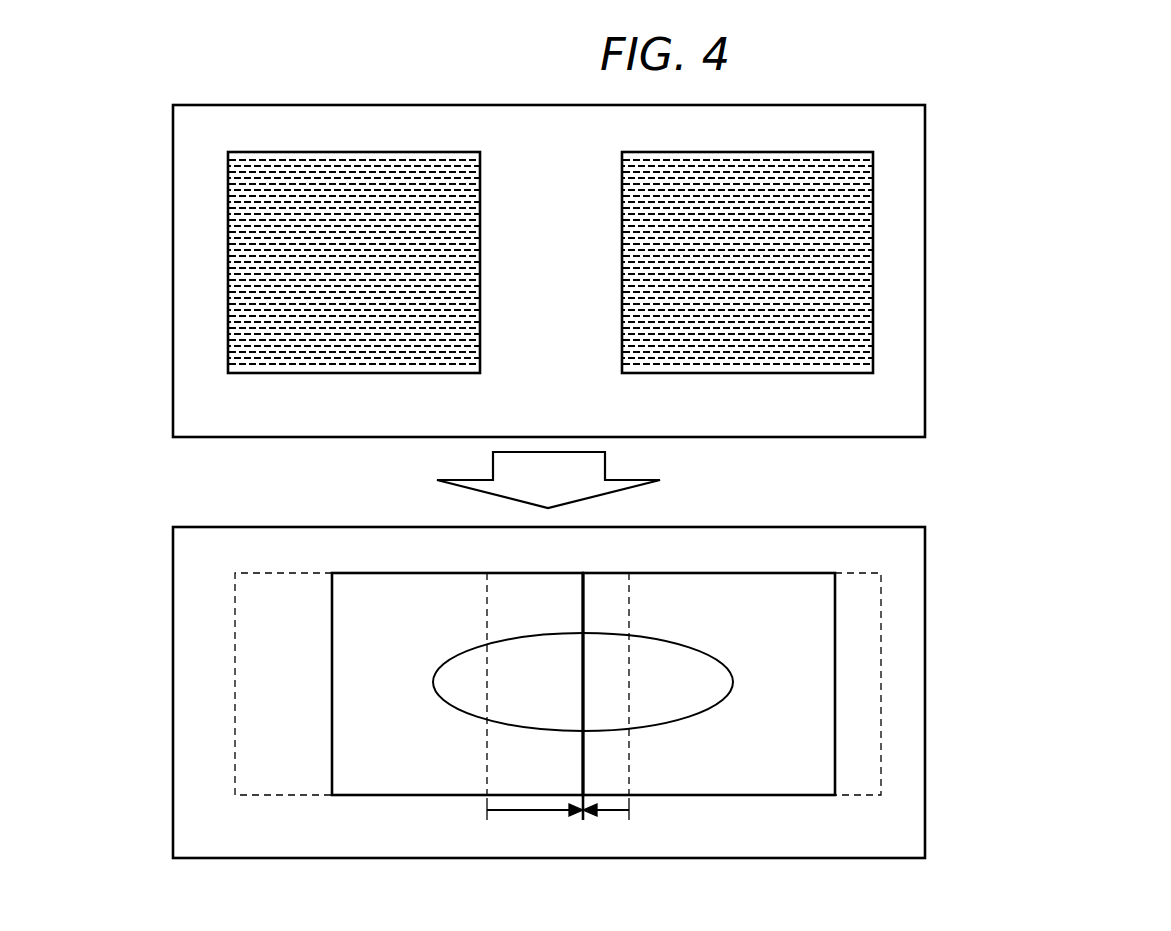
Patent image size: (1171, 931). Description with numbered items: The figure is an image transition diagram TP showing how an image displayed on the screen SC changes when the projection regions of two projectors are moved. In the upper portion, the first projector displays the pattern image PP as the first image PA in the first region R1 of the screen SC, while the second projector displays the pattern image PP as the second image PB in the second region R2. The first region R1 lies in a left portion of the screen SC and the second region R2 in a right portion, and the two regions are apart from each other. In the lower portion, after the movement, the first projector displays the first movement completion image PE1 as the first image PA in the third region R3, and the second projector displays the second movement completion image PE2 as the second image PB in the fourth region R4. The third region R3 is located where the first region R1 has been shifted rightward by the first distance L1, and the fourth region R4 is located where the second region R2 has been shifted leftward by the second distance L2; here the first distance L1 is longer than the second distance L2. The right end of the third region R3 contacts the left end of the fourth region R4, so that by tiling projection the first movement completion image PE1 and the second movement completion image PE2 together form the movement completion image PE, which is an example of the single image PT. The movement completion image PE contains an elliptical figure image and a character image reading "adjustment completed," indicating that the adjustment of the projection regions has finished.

The image transition diagram TP is at (696, 455).
The screen SC is at (925, 247).
The first region R1 is at (262, 573).
The second region R2 is at (881, 597).
The third region R3 is at (457, 665).
The fourth region R4 is at (709, 666).
The pattern image PP is at (550, 455).
The first image PA is at (310, 152).
The second image PB is at (703, 152).
The single image PT is at (583, 654).
The movement completion image PE is at (583, 654).
The first movement completion image PE1 is at (400, 573).
The second movement completion image PE2 is at (650, 550).
The first distance L1 is at (535, 822).
The second distance L2 is at (606, 822).